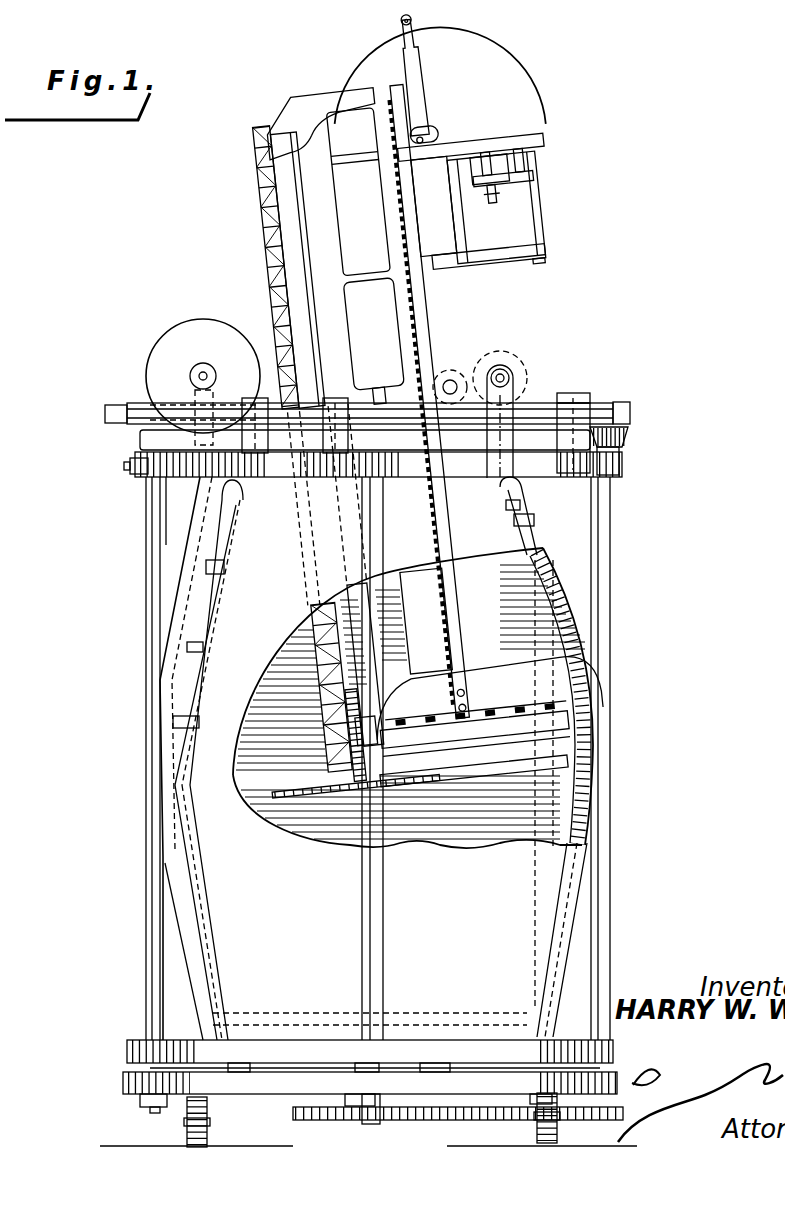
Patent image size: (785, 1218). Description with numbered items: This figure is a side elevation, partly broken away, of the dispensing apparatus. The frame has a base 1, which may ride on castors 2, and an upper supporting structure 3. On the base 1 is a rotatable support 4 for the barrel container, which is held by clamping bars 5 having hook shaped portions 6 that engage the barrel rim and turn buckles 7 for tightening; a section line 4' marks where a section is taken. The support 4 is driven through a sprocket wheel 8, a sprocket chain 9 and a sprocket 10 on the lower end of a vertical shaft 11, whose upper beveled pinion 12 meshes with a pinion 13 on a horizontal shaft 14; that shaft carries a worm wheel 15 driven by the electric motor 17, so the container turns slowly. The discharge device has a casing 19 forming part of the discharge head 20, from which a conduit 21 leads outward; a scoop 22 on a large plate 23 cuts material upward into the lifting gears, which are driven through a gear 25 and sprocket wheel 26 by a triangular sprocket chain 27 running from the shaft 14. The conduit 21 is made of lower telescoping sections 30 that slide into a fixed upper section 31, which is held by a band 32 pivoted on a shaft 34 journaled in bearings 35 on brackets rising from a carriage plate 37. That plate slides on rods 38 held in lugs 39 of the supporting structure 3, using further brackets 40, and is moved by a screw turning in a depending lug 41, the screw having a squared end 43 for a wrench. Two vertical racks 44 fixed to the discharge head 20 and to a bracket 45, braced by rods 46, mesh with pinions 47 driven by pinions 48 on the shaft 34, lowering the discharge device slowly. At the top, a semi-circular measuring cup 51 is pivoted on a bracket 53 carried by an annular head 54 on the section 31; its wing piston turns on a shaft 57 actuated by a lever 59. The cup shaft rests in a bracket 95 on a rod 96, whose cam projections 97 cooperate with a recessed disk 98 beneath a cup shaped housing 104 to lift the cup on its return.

The base 1 is at (137, 1083).
The castors 2 is at (207, 1128).
The upper supporting structure 3 is at (179, 758).
The rotatable support 4 is at (370, 1023).
The section line 4'— 4' is at (376, 696).
The clamping bars 5 is at (524, 540).
The hook shaped portions 6 is at (506, 507).
The turn buckles 7 is at (212, 607).
The sprocket wheel 8 is at (367, 1116).
The sprocket chain 9 is at (437, 1115).
The sprocket 10 is at (602, 1114).
The shaft 11 is at (606, 565).
The beveled pinion 12 is at (623, 448).
The pinion 13 is at (583, 393).
The shaft 14 is at (631, 412).
The worm wheel 15 is at (218, 395).
The electric motor 17 is at (203, 362).
The casing 19 is at (475, 740).
The discharge head 20 is at (487, 696).
The conduit 21 is at (424, 621).
The scoop 22 is at (430, 789).
The plate 23 is at (290, 795).
The gear 25 is at (352, 785).
The sprocket wheel 26 is at (335, 736).
The sprocket chain 27 is at (270, 270).
The lower telescoping sections 30 is at (397, 580).
The upper conduit section 31 is at (358, 192).
The band 32 is at (373, 334).
The shaft 34 is at (515, 378).
The bearings 35 is at (501, 367).
The plate 37 is at (140, 442).
The rods 38 is at (372, 392).
The lugs 39 is at (254, 455).
The brackets 40 is at (345, 432).
The depending lug 41 is at (165, 477).
The squared end 43 is at (140, 470).
The vertical racks 44 is at (421, 309).
The bracket 45 is at (310, 97).
The rods 46 is at (290, 227).
The pinions 47 is at (451, 369).
The pinions 48 is at (521, 361).
The cup 51 is at (436, 81).
The bracket 53 is at (545, 138).
The annular head 54 is at (346, 163).
The shaft 57 is at (420, 147).
The lever 59 is at (420, 60).
The bracket 95 is at (536, 182).
The rod 96 is at (546, 222).
The cam projections 97 is at (492, 205).
The disk 98 is at (478, 183).
The cup shaped housing 104 is at (512, 165).